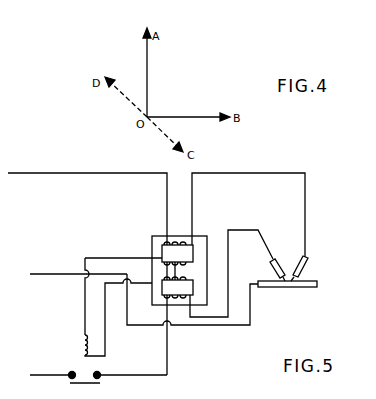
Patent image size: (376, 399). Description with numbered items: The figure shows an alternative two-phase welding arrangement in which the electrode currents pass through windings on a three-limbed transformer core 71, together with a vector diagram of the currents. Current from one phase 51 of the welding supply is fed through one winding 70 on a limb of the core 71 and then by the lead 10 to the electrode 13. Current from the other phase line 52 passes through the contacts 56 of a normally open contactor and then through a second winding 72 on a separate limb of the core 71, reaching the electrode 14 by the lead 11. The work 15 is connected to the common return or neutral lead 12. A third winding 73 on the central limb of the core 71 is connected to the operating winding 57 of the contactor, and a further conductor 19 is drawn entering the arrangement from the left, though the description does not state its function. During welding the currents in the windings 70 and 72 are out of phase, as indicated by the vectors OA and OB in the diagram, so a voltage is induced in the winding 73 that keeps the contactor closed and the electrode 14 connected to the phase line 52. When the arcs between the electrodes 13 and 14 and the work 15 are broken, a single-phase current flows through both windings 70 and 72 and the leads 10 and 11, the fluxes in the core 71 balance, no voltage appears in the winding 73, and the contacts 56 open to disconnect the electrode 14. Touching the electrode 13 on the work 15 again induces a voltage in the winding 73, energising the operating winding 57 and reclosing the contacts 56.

The welding current supply line 51 is at (15, 173).
The lead 10 is at (305, 227).
The three limbed core 71 is at (206, 270).
The winding 70 is at (175, 245).
The third winding 73 is at (162, 270).
The second winding 72 is at (174, 300).
The lead 11 is at (231, 230).
The electrode 14 is at (272, 265).
The electrode 13 is at (308, 268).
The work 15 is at (290, 288).
The neutral lead 12 is at (251, 326).
The conductor 19 is at (33, 274).
The operating winding 57 is at (82, 340).
The welding current supply line 52 is at (42, 375).
The contacts 56 is at (80, 383).